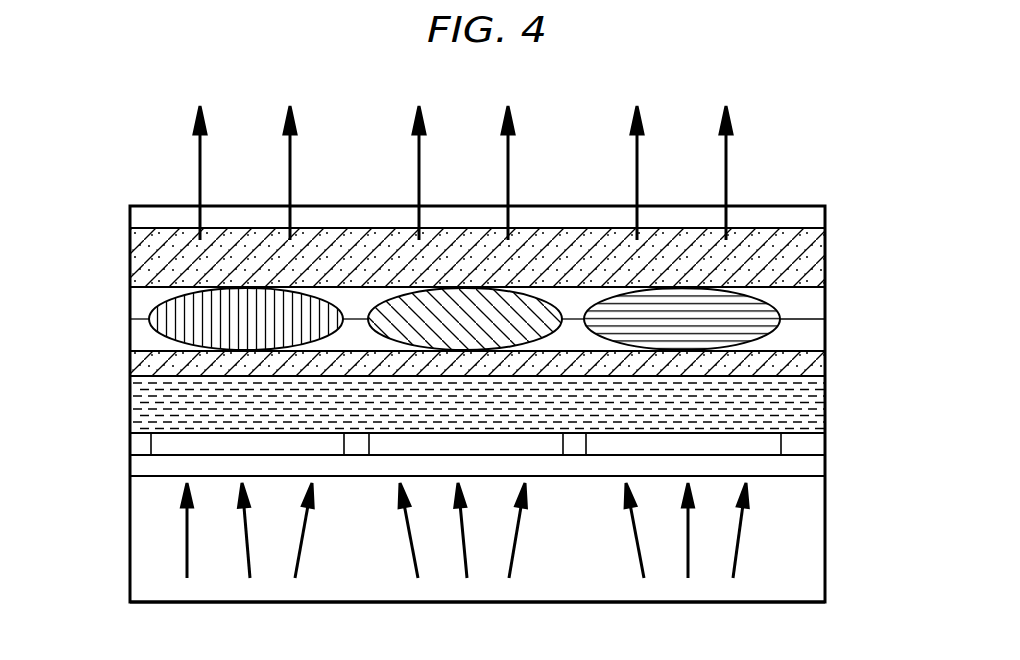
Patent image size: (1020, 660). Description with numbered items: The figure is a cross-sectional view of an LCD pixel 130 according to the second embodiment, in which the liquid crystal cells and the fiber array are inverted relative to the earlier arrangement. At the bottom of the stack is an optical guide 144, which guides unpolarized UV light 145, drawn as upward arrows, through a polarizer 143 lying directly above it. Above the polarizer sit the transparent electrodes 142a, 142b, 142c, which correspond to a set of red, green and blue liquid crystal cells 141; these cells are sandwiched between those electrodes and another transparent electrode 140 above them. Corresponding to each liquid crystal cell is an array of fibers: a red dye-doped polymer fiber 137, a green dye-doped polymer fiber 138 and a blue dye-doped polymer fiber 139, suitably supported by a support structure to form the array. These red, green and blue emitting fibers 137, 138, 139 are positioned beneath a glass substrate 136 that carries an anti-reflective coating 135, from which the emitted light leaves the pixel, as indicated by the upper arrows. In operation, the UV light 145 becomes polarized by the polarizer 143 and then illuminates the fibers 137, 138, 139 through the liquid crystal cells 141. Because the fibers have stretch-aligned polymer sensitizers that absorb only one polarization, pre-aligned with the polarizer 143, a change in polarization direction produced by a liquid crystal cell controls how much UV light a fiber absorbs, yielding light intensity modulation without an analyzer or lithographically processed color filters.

The pixel 130 is at (158, 155).
The anti-reflective coating 135 is at (802, 210).
The glass substrate 136 is at (815, 253).
The red dye-doped polymer fiber 137 is at (177, 332).
The green dye-doped polymer fiber 138 is at (396, 302).
The blue dye-doped polymer fiber 139 is at (757, 305).
The transparent electrode 140 is at (815, 366).
The liquid crystal cells 141 is at (815, 399).
The transparent electrode 142a is at (157, 450).
The transparent electrode 142b is at (387, 445).
The transparent electrode 142c is at (762, 440).
The polarizer 143 is at (140, 467).
The optical guide 144 is at (807, 547).
The UV light 145 is at (738, 558).